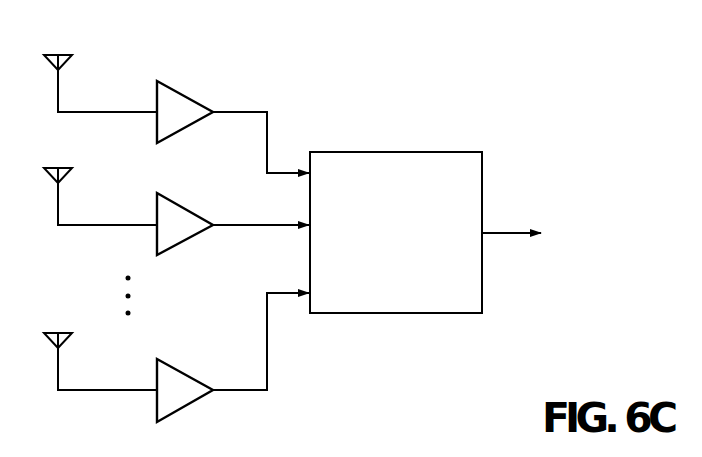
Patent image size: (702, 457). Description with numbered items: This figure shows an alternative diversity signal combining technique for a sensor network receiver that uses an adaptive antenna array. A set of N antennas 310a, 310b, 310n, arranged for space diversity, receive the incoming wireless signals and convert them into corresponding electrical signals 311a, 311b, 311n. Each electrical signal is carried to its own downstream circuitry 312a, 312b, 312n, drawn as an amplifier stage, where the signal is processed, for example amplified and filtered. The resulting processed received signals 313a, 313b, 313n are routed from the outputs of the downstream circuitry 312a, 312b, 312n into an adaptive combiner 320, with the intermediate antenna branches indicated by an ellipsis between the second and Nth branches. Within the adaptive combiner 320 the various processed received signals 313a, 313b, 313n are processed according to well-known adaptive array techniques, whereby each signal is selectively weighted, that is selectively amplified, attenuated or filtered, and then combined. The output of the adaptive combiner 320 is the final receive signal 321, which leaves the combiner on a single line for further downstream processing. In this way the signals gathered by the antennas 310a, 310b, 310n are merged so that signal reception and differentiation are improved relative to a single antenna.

The antenna 310a is at (52, 54).
The antenna 310b is at (52, 167).
The antenna 310n is at (52, 332).
The electrical signal 311a is at (99, 110).
The electrical signal 311b is at (99, 223).
The electrical signal 311n is at (94, 388).
The downstream circuitry 312a is at (170, 70).
The downstream circuitry 312b is at (170, 183).
The downstream circuitry 312n is at (161, 359).
The processed received signal 313a is at (235, 110).
The processed received signal 313b is at (235, 223).
The processed received signal 313n is at (268, 352).
The adaptive combiner 320 is at (435, 150).
The final receive signal 321 is at (515, 230).